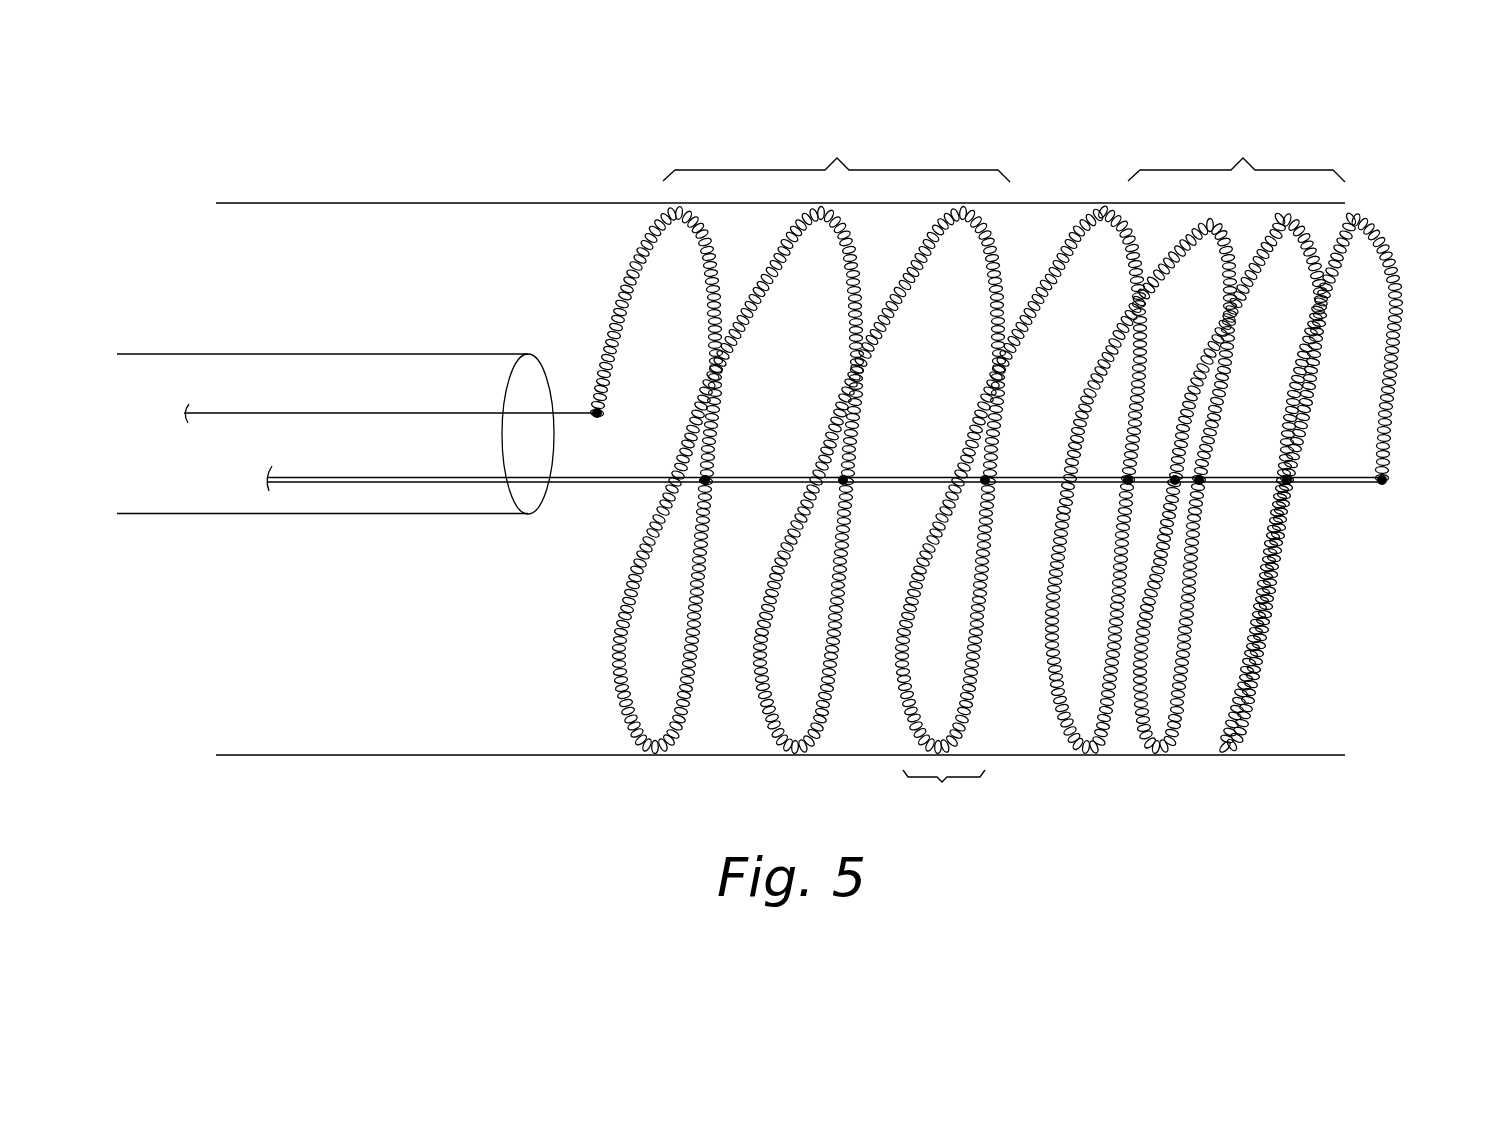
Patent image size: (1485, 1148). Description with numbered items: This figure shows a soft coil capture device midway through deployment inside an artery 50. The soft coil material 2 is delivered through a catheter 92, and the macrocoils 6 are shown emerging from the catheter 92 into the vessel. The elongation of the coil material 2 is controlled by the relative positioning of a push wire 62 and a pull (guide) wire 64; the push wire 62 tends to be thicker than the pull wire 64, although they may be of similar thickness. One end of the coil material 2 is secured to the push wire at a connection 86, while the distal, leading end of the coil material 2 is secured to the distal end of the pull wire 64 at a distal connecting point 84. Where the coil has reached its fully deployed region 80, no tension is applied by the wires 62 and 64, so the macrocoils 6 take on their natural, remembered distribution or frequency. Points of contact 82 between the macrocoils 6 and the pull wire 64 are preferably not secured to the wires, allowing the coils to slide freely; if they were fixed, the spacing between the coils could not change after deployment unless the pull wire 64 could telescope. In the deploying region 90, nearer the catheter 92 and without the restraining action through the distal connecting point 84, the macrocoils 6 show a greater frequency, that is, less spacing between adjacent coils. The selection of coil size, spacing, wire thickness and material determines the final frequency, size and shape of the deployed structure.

The soft coil material 2 is at (996, 434).
The macrocoils 6 is at (944, 793).
The artery 50 is at (339, 203).
The push wire 62 is at (446, 412).
The pull wire 64 is at (437, 483).
The fully deployed region 80 is at (847, 434).
The points of contact 82 is at (709, 477).
The distal connecting point 84 is at (1386, 477).
The push wire connection 86 is at (601, 416).
The deploying region 90 is at (1224, 434).
The catheter 92 is at (274, 354).